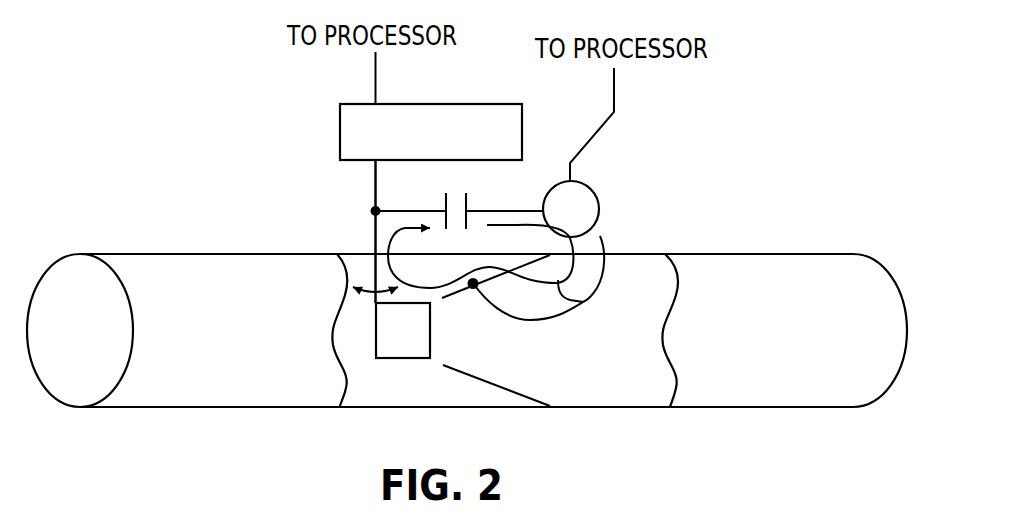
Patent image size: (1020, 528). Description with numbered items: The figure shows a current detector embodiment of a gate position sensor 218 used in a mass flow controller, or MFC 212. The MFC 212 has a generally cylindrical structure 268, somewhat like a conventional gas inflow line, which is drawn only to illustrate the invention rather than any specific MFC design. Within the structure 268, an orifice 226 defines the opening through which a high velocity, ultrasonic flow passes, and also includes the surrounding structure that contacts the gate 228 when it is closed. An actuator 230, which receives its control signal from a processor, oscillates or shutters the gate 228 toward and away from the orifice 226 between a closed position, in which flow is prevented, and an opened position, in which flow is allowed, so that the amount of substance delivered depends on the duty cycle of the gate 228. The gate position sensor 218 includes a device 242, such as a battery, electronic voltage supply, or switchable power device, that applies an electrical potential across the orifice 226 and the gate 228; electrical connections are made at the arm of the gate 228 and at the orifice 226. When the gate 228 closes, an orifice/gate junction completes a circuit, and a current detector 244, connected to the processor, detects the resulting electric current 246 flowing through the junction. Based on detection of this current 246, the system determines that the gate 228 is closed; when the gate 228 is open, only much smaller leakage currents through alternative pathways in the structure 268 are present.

The mass flow controller (MFC) 212 is at (713, 155).
The gate position sensor 218 is at (318, 183).
The orifice 226 is at (500, 382).
The gate 228 is at (402, 358).
The actuator 230 is at (467, 102).
The device for applying electrical potential 242 is at (525, 183).
The current detector 244 is at (593, 183).
The electric current 246 is at (583, 302).
The cylindrical structure 268 is at (798, 346).